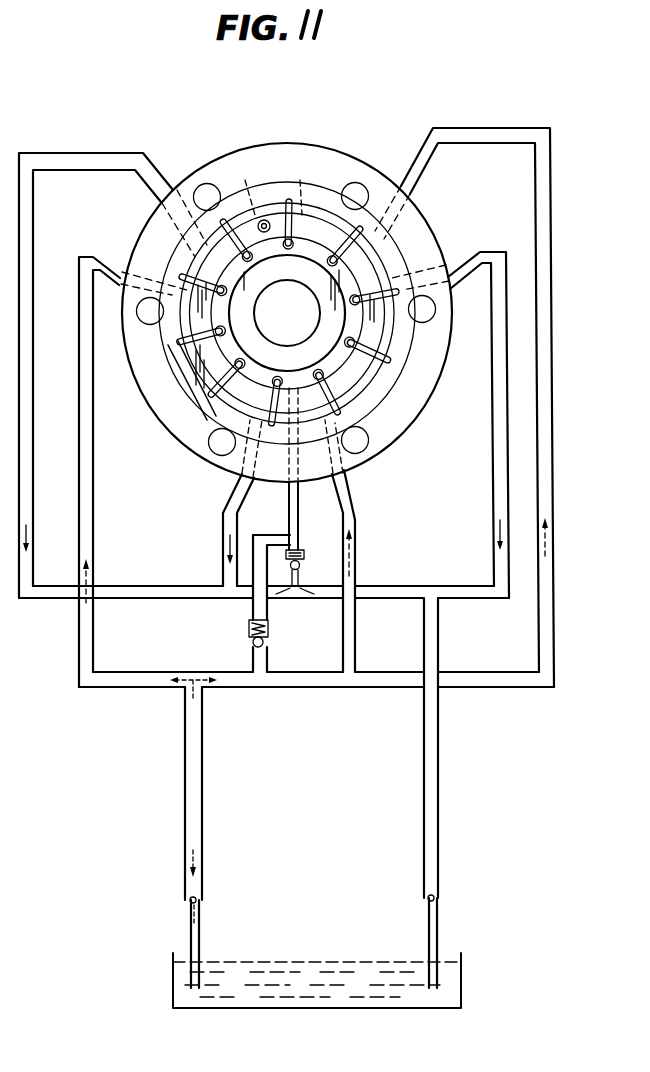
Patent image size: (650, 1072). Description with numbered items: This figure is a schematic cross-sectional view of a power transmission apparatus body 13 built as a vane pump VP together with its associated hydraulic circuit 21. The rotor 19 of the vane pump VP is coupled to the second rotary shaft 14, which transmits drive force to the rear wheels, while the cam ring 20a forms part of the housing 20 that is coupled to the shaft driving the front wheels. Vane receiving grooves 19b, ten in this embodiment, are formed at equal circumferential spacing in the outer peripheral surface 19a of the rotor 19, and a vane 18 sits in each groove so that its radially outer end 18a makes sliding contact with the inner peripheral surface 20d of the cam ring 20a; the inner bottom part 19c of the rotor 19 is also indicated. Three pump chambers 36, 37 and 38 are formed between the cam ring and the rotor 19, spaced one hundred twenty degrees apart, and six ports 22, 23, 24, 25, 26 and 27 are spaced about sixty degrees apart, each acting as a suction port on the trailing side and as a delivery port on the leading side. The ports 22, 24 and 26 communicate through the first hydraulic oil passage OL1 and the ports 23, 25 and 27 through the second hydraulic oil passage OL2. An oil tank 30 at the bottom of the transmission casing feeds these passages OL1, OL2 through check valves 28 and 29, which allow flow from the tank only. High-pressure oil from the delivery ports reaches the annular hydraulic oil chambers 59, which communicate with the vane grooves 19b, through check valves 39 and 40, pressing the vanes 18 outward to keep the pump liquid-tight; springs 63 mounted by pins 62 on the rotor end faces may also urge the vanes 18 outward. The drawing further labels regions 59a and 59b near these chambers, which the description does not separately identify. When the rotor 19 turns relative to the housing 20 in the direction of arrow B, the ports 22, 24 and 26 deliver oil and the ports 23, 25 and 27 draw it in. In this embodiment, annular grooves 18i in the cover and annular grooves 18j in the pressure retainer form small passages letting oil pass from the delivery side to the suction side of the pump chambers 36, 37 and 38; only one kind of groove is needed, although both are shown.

The power transmission apparatus body 13 is at (462, 313).
The second rotary shaft 14 is at (298, 330).
The vane 18 is at (187, 446).
The radially outer end of vane 18a is at (266, 448).
The annular grooves 18i is at (200, 420).
The annular grooves 18j is at (207, 463).
The rotor 19 is at (205, 377).
The outer peripheral surface of rotor 19a is at (343, 190).
The vane grooves 19b is at (228, 250).
The inner bottom part of rotor 19c is at (278, 358).
The housing 20 is at (436, 214).
The cam ring 20a is at (400, 432).
The inner peripheral surface of cam ring 20d is at (283, 185).
The hydraulic circuit 21 is at (490, 694).
The port 22 is at (198, 464).
The port 23 is at (163, 332).
The port 24 is at (214, 175).
The port 25 is at (403, 197).
The port 26 is at (410, 325).
The port 27 is at (383, 462).
The check valve 28 is at (440, 898).
The check valve 29 is at (189, 901).
The hydraulic oil reservoir 30 is at (463, 983).
The pump chamber 36 is at (303, 167).
The pump chamber 37 is at (390, 383).
The pump chamber 38 is at (190, 362).
The check valve 39 is at (323, 551).
The check valve 40 is at (267, 642).
The annular hydraulic oil chambers 59 is at (310, 469).
The drain passage branch 59a is at (207, 345).
The drain passage branch 59b is at (367, 263).
The pins 62 is at (255, 173).
The springs 63 is at (357, 242).
The arrow indicating direction of rotation B is at (395, 412).
The vane pump VP is at (215, 149).
The first hydraulic oil passage OL1 is at (97, 148).
The second hydraulic oil passage OL2 is at (511, 126).